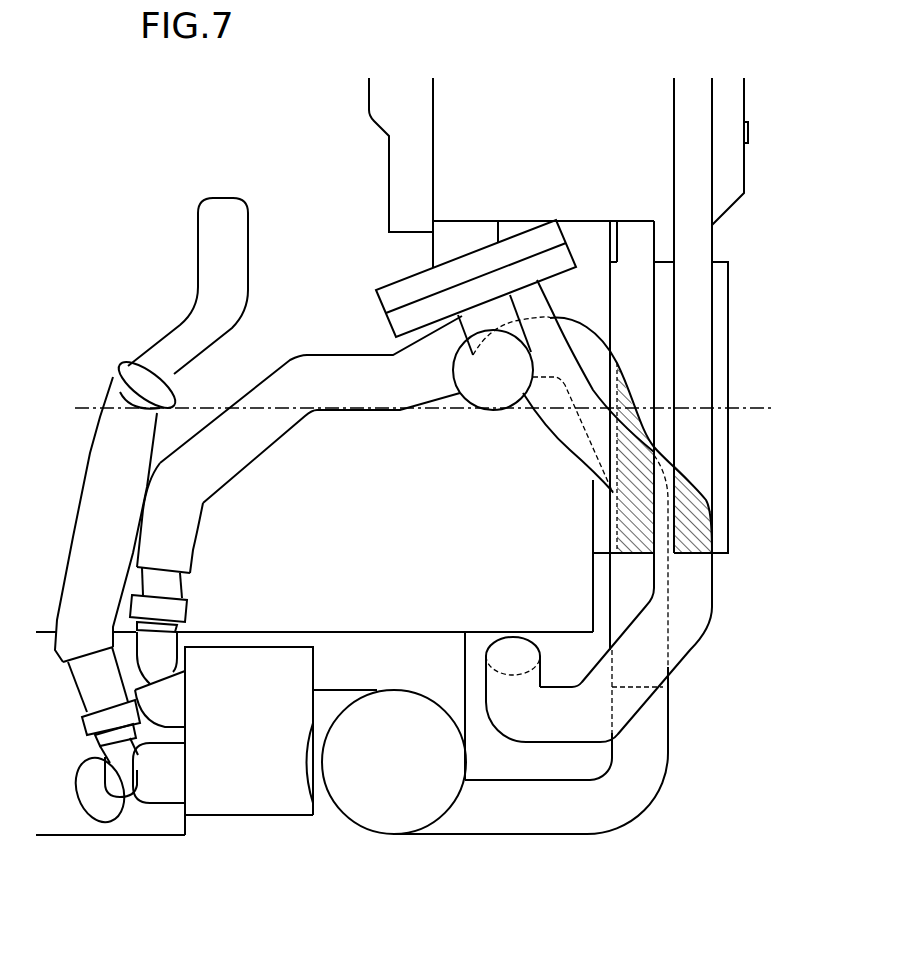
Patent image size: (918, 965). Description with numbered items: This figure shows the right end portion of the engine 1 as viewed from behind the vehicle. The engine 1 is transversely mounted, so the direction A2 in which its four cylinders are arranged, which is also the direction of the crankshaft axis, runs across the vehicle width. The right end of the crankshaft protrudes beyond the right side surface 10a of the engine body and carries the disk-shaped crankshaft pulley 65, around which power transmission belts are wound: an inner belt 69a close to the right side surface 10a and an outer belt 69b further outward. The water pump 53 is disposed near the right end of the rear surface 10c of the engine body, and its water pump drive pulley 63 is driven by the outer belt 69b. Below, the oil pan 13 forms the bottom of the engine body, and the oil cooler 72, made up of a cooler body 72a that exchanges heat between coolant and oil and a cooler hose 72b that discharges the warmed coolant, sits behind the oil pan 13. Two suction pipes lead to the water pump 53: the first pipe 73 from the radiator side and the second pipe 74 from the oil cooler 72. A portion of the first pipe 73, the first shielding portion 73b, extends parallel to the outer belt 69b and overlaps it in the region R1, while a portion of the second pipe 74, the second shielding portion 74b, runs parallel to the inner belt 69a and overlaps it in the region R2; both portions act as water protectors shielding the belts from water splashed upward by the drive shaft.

The engine 1 is at (130, 165).
The water pump 53 is at (369, 96).
The water pump drive pulley 63 is at (735, 90).
The inner belt 69a is at (632, 234).
The outer belt 69b is at (702, 240).
The crankshaft pulley 65 is at (718, 323).
The direction in which the cylinders are arranged A2 is at (763, 407).
The second suction pipe 74 is at (497, 408).
The rear surface of the engine body 10c is at (318, 508).
The region R2 is at (628, 467).
The region R1 is at (698, 520).
The second shielding portion 74b is at (632, 580).
The right side surface of the engine body 10a is at (598, 612).
The first shielding portion 73b is at (700, 572).
The first suction pipe 73 is at (692, 645).
The oil cooler 72 is at (248, 646).
The cooler body 72a is at (228, 816).
The cooler hose 72b is at (492, 836).
The oil pan 13 is at (98, 836).